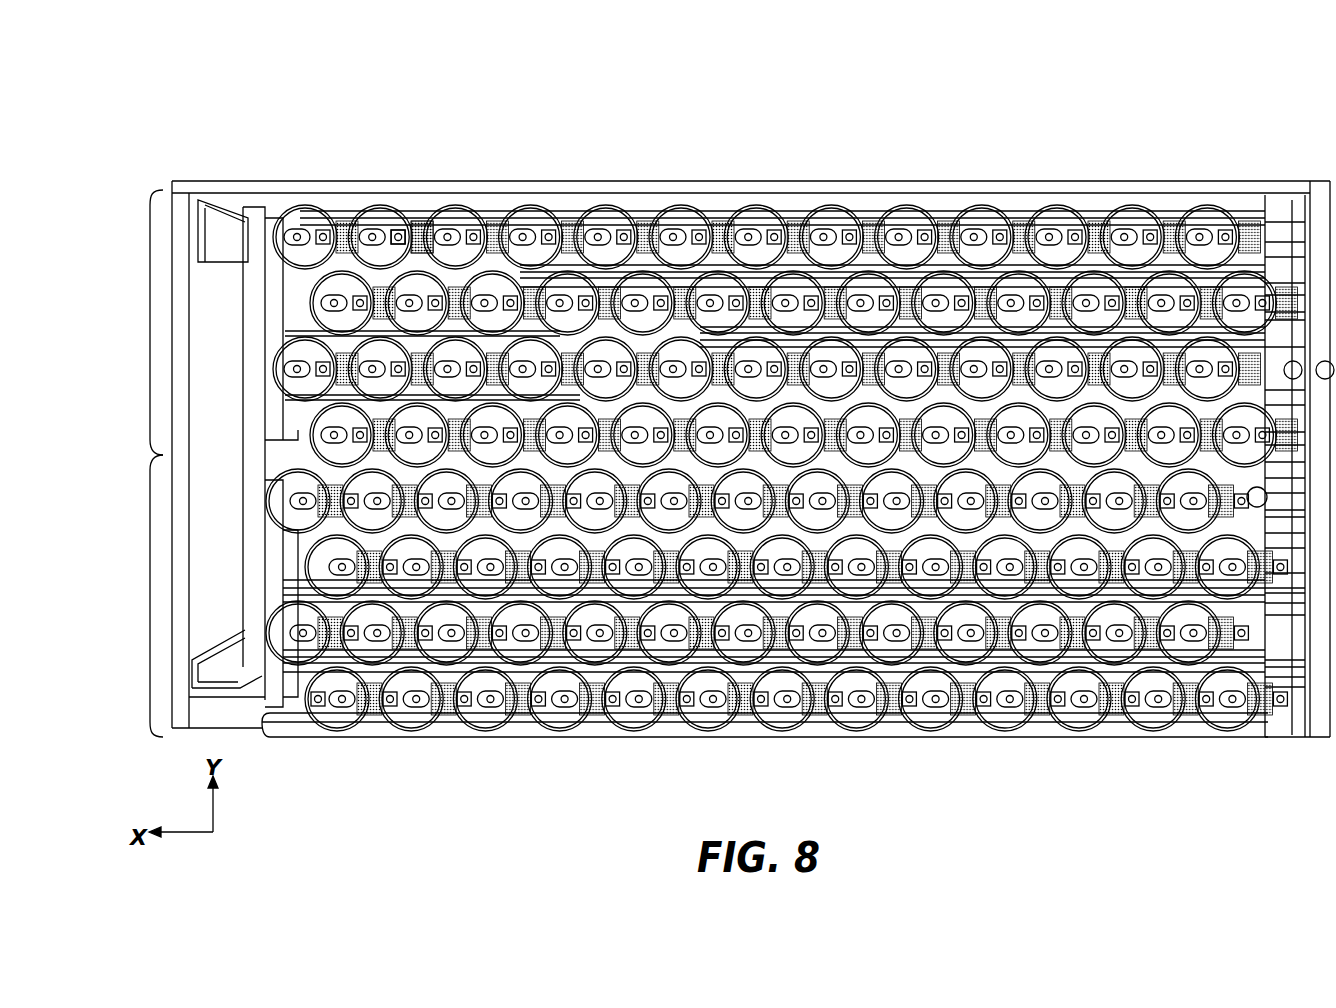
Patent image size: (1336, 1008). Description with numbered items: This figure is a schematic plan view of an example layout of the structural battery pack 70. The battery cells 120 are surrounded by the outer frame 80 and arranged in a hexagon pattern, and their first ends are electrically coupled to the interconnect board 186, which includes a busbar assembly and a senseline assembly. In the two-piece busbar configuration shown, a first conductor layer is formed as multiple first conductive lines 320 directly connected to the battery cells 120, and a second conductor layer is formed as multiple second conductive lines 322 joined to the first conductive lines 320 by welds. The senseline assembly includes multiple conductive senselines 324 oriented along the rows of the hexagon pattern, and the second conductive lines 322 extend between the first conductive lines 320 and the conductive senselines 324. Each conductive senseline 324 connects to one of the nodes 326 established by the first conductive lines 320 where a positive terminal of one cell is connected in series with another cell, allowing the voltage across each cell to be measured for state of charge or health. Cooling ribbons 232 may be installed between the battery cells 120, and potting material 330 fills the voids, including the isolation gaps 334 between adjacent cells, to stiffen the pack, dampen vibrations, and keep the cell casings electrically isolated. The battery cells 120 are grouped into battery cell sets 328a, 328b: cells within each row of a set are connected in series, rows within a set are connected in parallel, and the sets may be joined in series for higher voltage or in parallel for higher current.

The structural battery pack 70 is at (397, 107).
The battery cells 120 is at (310, 225).
The first conductive lines 320 is at (398, 226).
The second conductive lines 322 is at (424, 228).
The conductive senselines 324 is at (630, 220).
The interconnect board 186 is at (774, 394).
The first battery cell set 328a is at (150, 325).
The second battery cell set 328b is at (150, 585).
The cooling ribbons 232 is at (300, 460).
The potting material 330 is at (245, 329).
The isolation gaps 334 is at (245, 560).
The nodes 326 is at (390, 707).
The outer frame 80 is at (1231, 740).